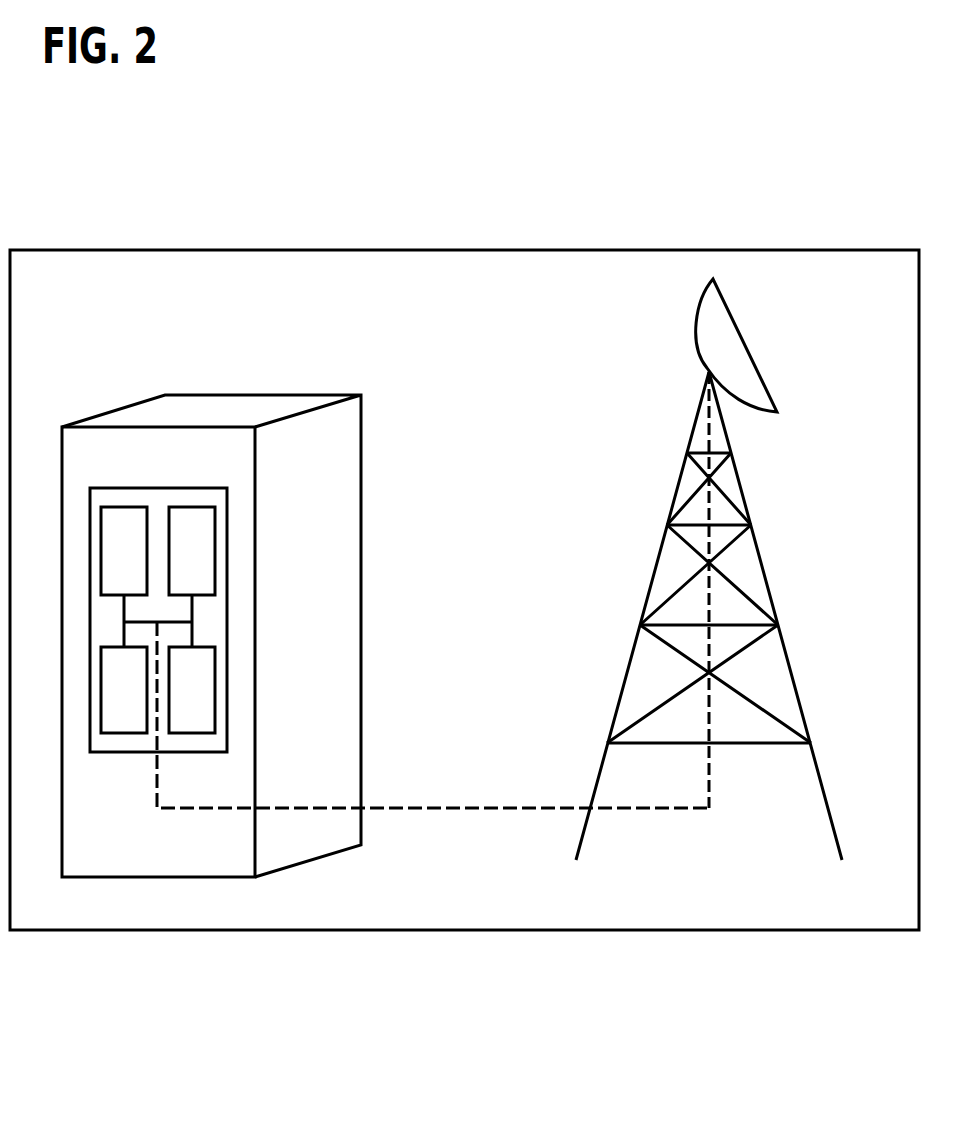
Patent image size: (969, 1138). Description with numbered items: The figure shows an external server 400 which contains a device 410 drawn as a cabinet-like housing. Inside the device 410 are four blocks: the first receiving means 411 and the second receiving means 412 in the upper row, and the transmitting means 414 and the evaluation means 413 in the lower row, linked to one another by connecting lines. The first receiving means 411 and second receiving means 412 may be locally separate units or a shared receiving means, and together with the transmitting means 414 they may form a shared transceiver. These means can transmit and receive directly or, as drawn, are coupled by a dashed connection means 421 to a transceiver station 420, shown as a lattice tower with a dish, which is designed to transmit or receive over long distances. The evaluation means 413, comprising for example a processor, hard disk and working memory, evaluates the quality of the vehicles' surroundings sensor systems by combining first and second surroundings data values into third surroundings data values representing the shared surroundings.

The external server 400 is at (456, 932).
The device 410 is at (227, 618).
The first receiving means 411 is at (116, 507).
The second receiving means 412 is at (215, 540).
The evaluation means 413 is at (215, 703).
The transmitting means 414 is at (128, 735).
The transceiver station 420 is at (770, 745).
The connection means 421 is at (462, 805).